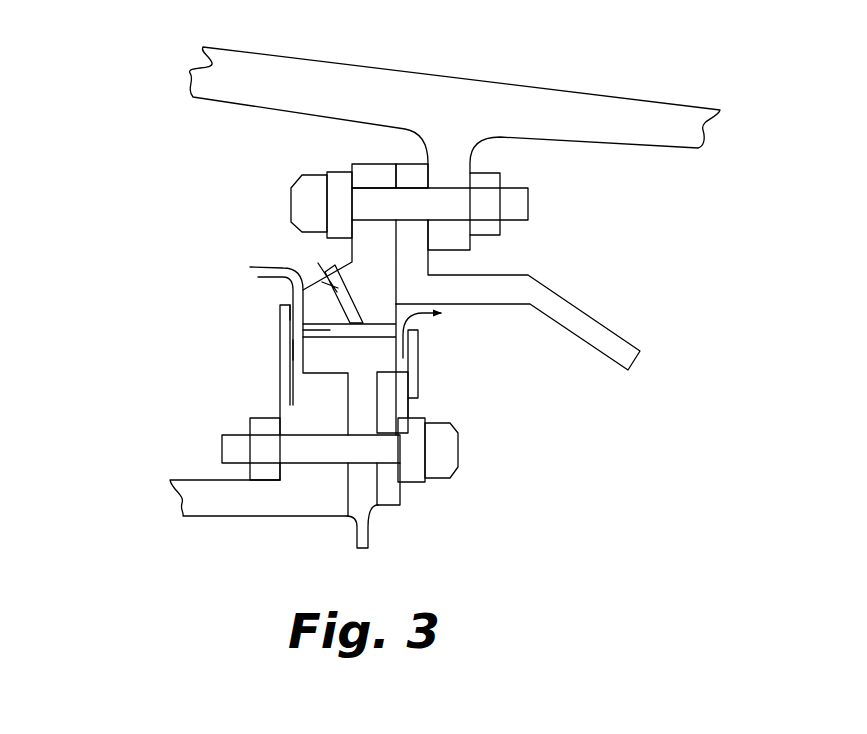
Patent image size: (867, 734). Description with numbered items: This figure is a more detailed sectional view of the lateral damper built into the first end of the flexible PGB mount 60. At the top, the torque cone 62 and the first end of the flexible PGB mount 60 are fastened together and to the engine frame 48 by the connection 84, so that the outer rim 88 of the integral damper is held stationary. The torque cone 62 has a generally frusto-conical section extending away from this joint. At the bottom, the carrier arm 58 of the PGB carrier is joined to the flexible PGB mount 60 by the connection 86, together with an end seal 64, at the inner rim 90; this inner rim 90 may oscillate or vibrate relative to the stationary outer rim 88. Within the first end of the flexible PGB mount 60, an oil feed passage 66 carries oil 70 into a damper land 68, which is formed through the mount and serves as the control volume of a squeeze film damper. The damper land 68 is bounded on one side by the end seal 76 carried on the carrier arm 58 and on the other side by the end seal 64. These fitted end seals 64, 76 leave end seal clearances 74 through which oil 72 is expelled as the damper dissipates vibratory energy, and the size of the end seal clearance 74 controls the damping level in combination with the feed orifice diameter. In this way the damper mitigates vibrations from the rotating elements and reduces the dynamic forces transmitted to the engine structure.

The engine frame 48 is at (540, 100).
The carrier arm 58 is at (223, 513).
The flexible PGB mount 60 is at (360, 538).
The torque cone 62 is at (573, 322).
The end seal 64 is at (390, 497).
The oil feed passage 66 is at (283, 268).
The damper land 68 is at (330, 335).
The oil 70 is at (317, 272).
The oil 72 is at (256, 280).
The end seal clearance 74 is at (340, 387).
The end seal 76 is at (300, 348).
The connection 84 is at (296, 168).
The connection 86 is at (213, 420).
The outer rim 88 is at (369, 242).
The inner rim 90 is at (366, 386).